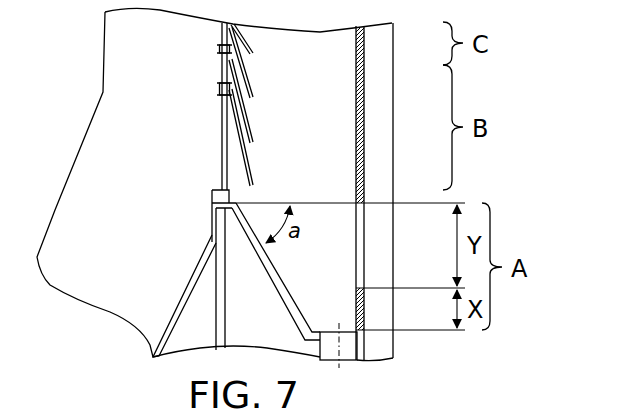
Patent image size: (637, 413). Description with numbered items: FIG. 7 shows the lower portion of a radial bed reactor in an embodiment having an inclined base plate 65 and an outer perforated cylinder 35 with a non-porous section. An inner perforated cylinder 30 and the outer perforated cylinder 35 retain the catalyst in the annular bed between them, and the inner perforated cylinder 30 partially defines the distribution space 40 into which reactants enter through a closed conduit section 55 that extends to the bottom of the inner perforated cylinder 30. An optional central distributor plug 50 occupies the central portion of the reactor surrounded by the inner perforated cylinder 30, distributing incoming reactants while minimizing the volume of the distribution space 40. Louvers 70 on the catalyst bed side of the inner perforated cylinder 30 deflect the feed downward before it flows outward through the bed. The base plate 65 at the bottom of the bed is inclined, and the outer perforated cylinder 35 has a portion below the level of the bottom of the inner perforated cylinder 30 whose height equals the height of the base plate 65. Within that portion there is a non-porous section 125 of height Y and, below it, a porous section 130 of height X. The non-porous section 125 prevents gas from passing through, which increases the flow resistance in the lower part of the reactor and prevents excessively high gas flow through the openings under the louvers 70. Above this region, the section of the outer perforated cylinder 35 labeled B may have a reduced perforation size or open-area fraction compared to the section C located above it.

The inner perforated cylinder 30 is at (221, 31).
The outer perforated cylinder 35 is at (364, 48).
The distribution space 40 is at (157, 281).
The central distributor plug 50 is at (86, 126).
The closed conduit section 55 is at (193, 272).
The base plate 65 is at (292, 290).
The louvers 70 is at (248, 127).
The non-porous section 125 is at (364, 243).
The porous section 130 is at (364, 310).